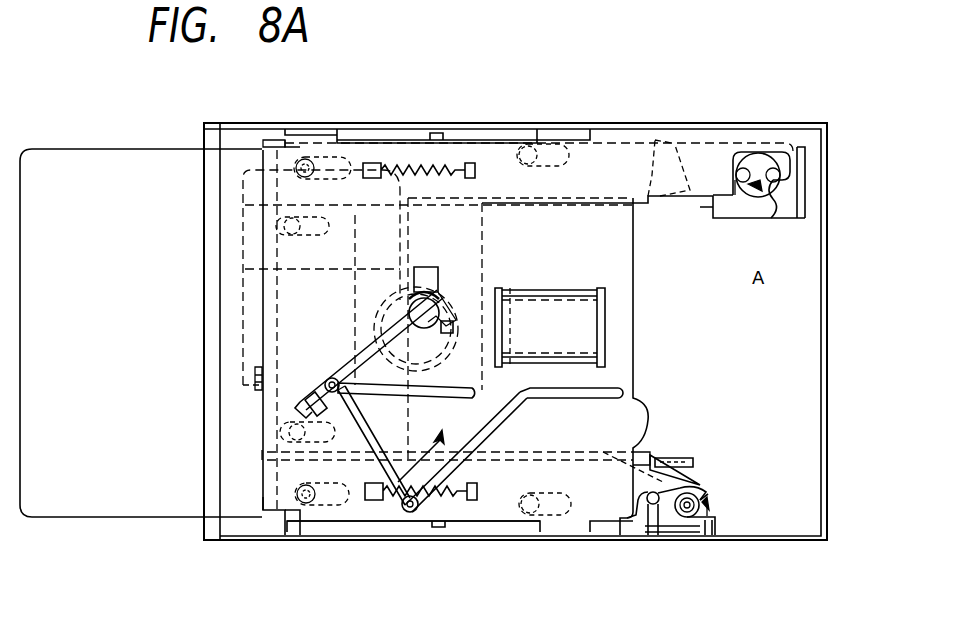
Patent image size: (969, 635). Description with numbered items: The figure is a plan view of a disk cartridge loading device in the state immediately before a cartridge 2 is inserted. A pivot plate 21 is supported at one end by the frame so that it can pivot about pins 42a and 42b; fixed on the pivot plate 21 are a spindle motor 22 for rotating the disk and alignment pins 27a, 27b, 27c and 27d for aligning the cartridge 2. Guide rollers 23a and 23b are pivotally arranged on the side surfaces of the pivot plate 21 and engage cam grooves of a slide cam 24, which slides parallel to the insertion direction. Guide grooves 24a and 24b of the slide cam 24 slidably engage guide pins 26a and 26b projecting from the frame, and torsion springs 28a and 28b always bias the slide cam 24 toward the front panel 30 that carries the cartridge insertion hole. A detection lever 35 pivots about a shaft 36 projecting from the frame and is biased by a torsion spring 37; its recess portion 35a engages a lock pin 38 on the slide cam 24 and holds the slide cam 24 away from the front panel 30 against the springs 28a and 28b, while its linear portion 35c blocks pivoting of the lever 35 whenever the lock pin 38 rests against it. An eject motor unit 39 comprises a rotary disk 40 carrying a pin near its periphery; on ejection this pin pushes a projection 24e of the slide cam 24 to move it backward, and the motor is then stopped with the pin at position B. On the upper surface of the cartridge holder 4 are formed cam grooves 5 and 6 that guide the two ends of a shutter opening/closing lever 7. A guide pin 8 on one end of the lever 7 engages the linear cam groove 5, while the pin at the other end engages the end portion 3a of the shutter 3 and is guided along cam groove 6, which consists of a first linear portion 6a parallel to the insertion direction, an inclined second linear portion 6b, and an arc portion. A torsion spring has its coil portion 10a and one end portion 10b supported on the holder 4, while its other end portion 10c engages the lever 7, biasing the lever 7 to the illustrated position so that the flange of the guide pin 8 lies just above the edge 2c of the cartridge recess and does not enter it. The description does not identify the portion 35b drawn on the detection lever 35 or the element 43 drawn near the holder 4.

The cartridge 2 is at (86, 165).
The edge of recess portion 2c is at (255, 380).
The shutter 3 is at (243, 298).
The end portion of shutter 3a is at (390, 526).
The cartridge holder 4 is at (264, 500).
The cam groove 5 is at (455, 396).
The cam groove 6 is at (458, 440).
The first linear portion 6a is at (630, 390).
The second linear portion 6b is at (485, 462).
The shutter opening/closing lever 7 is at (365, 512).
The guide pin 8 is at (328, 385).
The coil portion 10a is at (453, 280).
The end portion of torsion spring 10b is at (518, 314).
The end portion of torsion spring 10c is at (335, 388).
The pivot plate 21 is at (700, 484).
The spindle motor 22 is at (378, 318).
The guide roller 23a is at (436, 533).
The guide roller 23b is at (437, 132).
The slide cam 24 is at (755, 152).
The guide groove 24a is at (270, 450).
The guide groove 24b is at (343, 232).
The projection 24e is at (790, 197).
The guide pin 26a is at (290, 430).
The guide pin 26b is at (285, 229).
The alignment pin 27a is at (290, 533).
The alignment pin 27b is at (548, 517).
The alignment pin 27c is at (305, 158).
The alignment pin 27d is at (542, 141).
The torsion spring 28a is at (458, 522).
The torsion spring 28b is at (409, 162).
The front panel 30 is at (210, 483).
The detection lever 35 is at (703, 488).
The recess portion 35a is at (700, 490).
The lever arm 35b is at (600, 452).
The linear portion 35c is at (642, 517).
The shaft 36 is at (690, 517).
The torsion spring 37 is at (712, 518).
The lock pin 38 is at (653, 505).
The eject motor unit 39 is at (712, 203).
The rotary disk 40 is at (764, 160).
The pin 42a is at (690, 457).
The pin 42b is at (652, 138).
The guide 43 is at (315, 535).